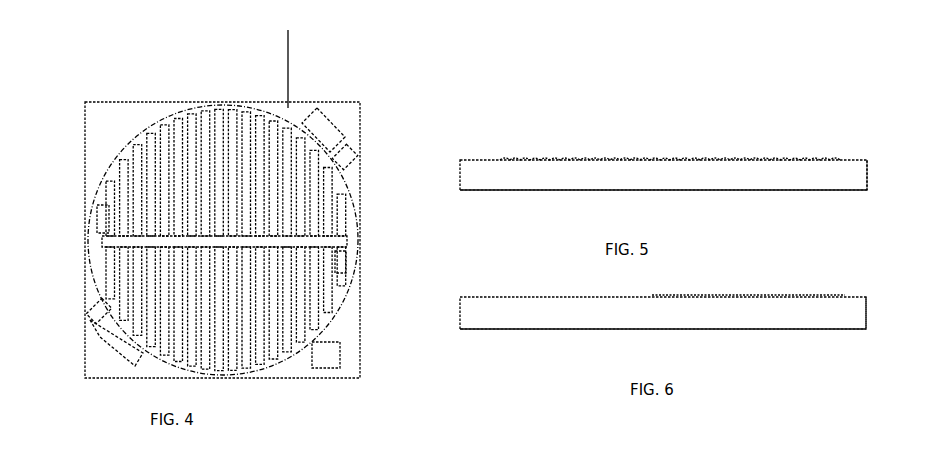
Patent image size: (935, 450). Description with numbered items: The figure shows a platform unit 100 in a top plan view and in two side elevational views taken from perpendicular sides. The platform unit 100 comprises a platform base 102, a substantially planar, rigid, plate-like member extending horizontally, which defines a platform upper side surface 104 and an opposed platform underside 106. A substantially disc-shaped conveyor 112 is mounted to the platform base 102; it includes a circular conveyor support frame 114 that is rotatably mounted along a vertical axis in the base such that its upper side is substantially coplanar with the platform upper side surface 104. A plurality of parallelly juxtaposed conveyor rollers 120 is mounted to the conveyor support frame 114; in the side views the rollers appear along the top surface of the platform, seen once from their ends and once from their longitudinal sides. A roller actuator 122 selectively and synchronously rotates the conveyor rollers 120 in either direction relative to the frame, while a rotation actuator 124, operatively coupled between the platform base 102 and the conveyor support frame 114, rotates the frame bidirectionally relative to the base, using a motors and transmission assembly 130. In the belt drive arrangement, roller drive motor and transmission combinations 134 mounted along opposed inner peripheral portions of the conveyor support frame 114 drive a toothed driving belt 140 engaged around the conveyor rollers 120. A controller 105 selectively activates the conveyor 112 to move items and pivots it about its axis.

In FIG. 4, the platform unit 100 is at (240, 384).
In FIG. 5, the platform unit 100 is at (764, 138).
In FIG. 6, the platform unit 100 is at (775, 275).
In FIG. 4, the platform base 102 is at (115, 106).
In FIG. 5, the platform base 102 is at (473, 168).
In FIG. 6, the platform base 102 is at (487, 308).
In FIG. 4, the platform upper side surface 104 is at (358, 352).
In FIG. 5, the platform upper side surface 104 is at (845, 160).
In FIG. 6, the platform upper side surface 104 is at (857, 297).
In FIG. 4, the controller 105 is at (318, 370).
In FIG. 5, the platform underside 106 is at (842, 192).
In FIG. 6, the platform underside 106 is at (883, 352).
In FIG. 4, the conveyor 112 is at (323, 178).
In FIG. 4, the conveyor support frame 114 is at (288, 30).
In FIG. 4, the conveyor rollers 120 is at (180, 157).
In FIG. 5, the conveyor rollers 120 is at (655, 160).
In FIG. 6, the conveyor rollers 120 is at (563, 296).
In FIG. 4, the roller actuator 122 is at (158, 238).
In FIG. 4, the rotation actuator 124 is at (329, 129).
In FIG. 4, the motors and transmission assembly 130 is at (345, 102).
In FIG. 4, the roller drive motor and transmission combination 134 is at (103, 214).
In FIG. 4, the driving belt 140 is at (167, 192).